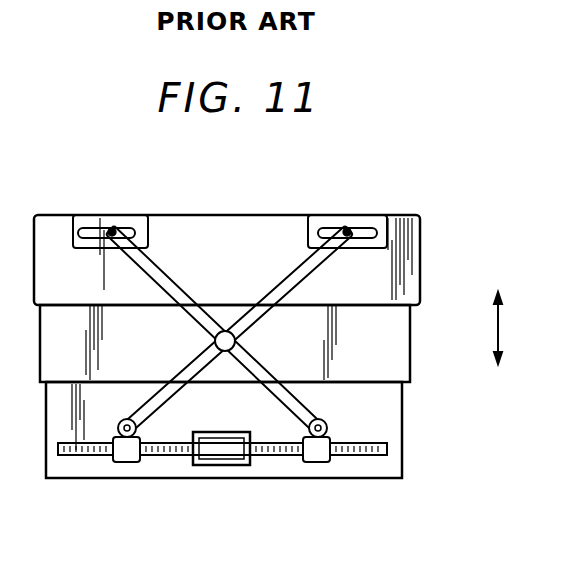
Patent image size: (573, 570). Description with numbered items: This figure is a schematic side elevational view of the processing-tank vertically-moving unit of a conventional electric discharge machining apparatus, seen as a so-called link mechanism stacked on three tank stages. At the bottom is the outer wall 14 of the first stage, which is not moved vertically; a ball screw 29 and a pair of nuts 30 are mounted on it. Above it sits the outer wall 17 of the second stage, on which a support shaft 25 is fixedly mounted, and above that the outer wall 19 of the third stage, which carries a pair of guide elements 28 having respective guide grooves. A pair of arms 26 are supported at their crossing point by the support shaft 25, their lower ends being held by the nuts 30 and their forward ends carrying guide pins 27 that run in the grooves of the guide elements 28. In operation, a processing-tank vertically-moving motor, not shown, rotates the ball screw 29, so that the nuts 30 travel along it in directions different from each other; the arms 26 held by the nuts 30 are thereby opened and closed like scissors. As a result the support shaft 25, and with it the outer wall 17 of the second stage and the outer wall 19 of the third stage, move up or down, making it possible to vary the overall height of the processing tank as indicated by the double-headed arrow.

The outer wall of the first stage 14 is at (393, 420).
The outer wall of the second stage 17 is at (402, 355).
The outer wall of the third stage 19 is at (410, 272).
The support shaft 25 is at (207, 338).
The arms 26 is at (173, 288).
The guide pins 27 is at (112, 230).
The guide elements 28 is at (88, 222).
The ball screw 29 is at (83, 456).
The nuts 30 is at (128, 455).